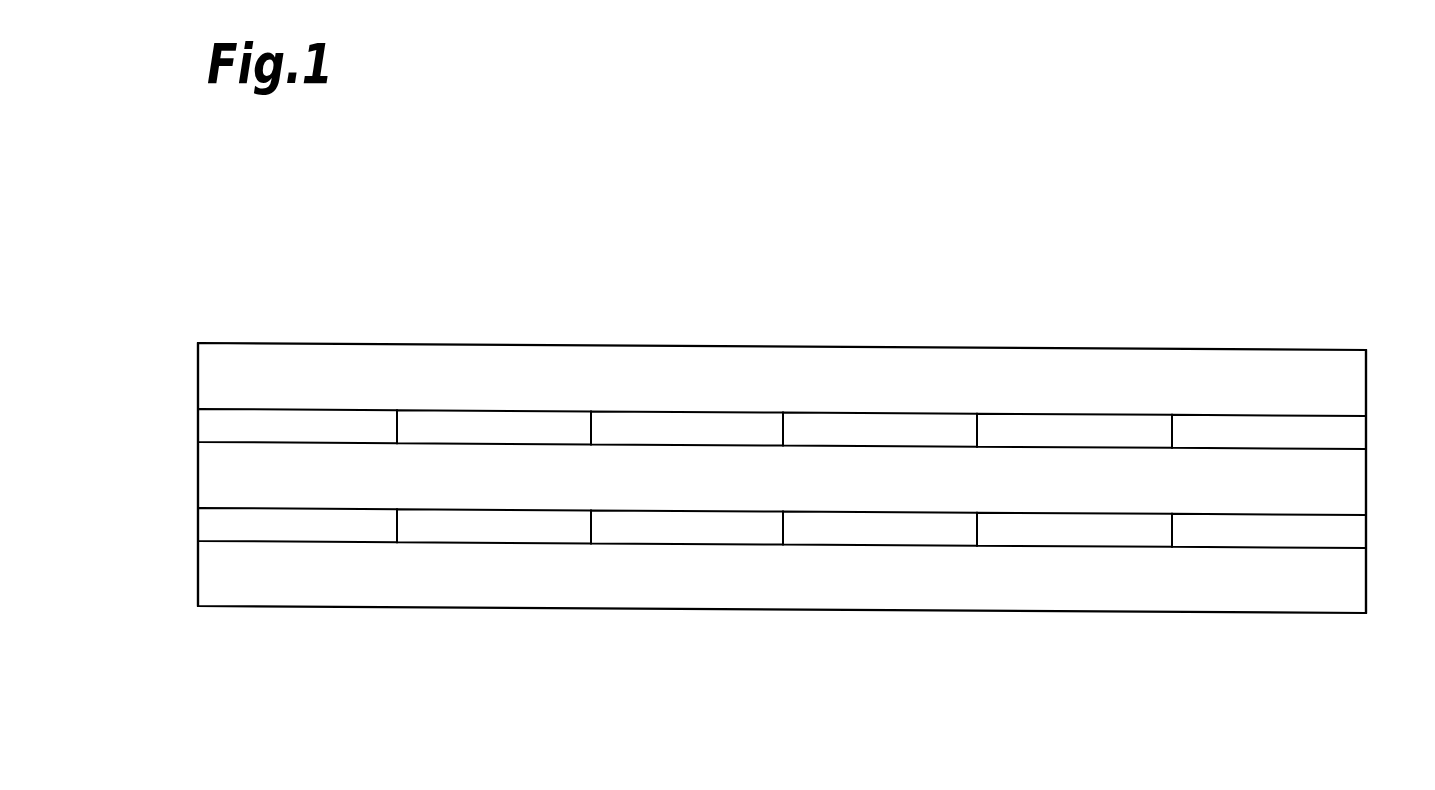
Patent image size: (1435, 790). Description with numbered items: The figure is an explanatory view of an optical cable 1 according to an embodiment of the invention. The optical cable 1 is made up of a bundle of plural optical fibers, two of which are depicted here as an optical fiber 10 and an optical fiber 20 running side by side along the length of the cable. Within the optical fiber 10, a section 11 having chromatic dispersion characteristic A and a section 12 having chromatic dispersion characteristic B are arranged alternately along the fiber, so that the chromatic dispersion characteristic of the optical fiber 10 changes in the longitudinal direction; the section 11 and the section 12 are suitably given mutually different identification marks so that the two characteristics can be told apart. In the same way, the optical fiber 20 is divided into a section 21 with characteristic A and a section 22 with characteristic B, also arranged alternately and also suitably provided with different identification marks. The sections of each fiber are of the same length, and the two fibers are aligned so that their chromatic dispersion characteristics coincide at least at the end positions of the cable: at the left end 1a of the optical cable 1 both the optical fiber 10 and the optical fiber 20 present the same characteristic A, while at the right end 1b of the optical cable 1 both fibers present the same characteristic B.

The optical cable 1 is at (1009, 349).
The left end 1a is at (197, 368).
The right end 1b is at (1366, 373).
The optical fiber 10 is at (782, 342).
The section 11 is at (278, 420).
The section 12 is at (476, 420).
The optical fiber 20 is at (782, 618).
The section 21 is at (280, 536).
The section 22 is at (477, 537).